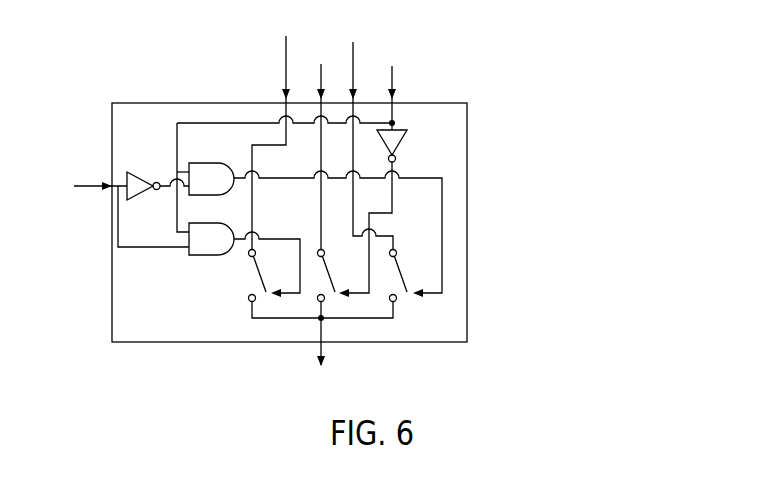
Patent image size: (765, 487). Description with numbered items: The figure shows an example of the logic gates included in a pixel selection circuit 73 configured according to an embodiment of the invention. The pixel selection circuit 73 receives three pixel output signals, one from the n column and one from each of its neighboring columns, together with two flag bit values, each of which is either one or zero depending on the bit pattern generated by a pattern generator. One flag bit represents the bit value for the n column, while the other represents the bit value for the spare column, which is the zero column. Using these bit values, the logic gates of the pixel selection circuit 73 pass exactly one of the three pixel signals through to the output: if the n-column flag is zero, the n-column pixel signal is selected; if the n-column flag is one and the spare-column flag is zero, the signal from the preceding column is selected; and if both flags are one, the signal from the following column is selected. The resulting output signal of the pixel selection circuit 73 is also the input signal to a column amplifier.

The pixel selection circuit 73 is at (82, 76).